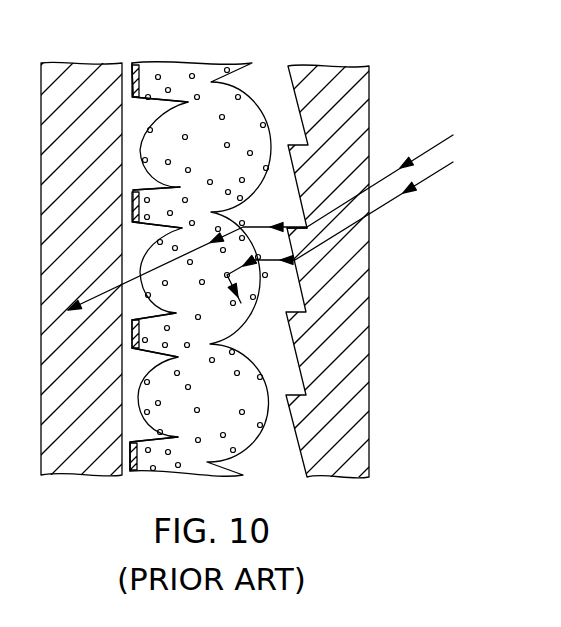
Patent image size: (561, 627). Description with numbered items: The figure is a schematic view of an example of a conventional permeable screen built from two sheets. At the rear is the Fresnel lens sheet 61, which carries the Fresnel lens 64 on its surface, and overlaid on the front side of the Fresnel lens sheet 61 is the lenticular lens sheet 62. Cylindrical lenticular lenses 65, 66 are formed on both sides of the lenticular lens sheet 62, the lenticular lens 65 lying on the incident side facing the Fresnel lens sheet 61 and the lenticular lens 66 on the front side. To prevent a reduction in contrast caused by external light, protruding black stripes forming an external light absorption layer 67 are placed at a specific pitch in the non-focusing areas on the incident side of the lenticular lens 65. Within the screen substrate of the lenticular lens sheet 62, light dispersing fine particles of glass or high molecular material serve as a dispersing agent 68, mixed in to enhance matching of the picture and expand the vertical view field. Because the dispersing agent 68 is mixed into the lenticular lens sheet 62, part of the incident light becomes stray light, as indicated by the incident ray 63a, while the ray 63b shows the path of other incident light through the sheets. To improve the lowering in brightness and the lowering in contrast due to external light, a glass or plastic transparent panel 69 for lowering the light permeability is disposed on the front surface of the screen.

The Fresnel lens sheet 61 is at (330, 65).
The lenticular lens sheet 62 is at (210, 63).
The incident ray 63a is at (361, 226).
The incident light ray 63b is at (282, 216).
The Fresnel lens 64 is at (294, 96).
The lenticular lens 65 is at (258, 188).
The lenticular lens 66 is at (148, 128).
The external light absorption layer 67 is at (135, 80).
The dispersing agent 68 is at (192, 73).
The transparent panel 69 is at (85, 63).